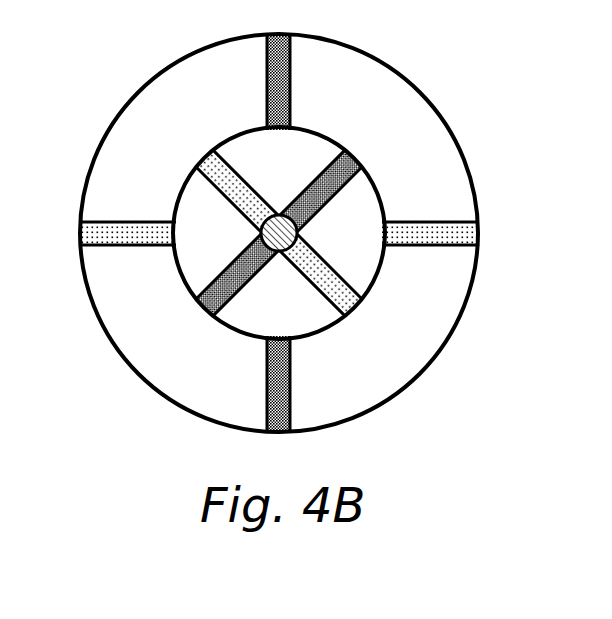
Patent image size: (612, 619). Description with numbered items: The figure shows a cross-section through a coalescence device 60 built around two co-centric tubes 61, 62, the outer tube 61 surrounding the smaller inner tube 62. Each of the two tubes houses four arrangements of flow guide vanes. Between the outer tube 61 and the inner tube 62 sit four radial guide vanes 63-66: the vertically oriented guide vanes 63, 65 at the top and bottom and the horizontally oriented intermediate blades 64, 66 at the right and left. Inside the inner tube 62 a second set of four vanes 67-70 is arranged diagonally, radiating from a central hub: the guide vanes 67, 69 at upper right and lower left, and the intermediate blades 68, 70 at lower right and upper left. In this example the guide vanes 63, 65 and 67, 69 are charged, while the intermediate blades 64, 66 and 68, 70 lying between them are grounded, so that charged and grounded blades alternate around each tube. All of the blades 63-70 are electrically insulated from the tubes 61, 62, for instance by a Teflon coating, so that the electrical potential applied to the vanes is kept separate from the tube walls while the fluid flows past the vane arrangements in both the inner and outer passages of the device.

The coalescence device 60 is at (103, 72).
The co-centric tube 61 is at (437, 107).
The co-centric tube 62 is at (187, 290).
The guide vane 63 is at (290, 92).
The intermediate blade 64 is at (420, 222).
The guide vane 65 is at (290, 383).
The intermediate blade 66 is at (128, 222).
The guide vane 67 is at (317, 208).
The intermediate blade 68 is at (300, 273).
The guide vane 69 is at (240, 254).
The intermediate blade 70 is at (255, 195).